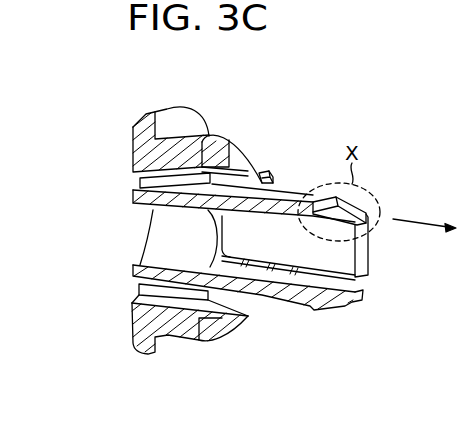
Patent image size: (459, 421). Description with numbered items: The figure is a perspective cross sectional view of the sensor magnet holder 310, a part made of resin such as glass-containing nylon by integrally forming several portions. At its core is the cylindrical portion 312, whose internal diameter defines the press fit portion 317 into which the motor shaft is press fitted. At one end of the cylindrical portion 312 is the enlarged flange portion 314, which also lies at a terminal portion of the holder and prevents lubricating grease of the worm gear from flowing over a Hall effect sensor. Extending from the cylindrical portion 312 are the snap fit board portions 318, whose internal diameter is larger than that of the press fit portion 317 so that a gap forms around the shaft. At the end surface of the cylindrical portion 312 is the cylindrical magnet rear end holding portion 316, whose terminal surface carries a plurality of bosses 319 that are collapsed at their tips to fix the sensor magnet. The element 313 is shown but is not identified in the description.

The sensor magnet holder 310 is at (260, 391).
The cylindrical portion 312 is at (177, 162).
The bottom block 313 is at (123, 291).
The flange portion 314 is at (138, 132).
The magnet rear end holding portion 316 is at (229, 140).
The press fit portion 317 is at (168, 239).
The snap fit board portion 318 is at (286, 196).
The boss 319 is at (268, 172).